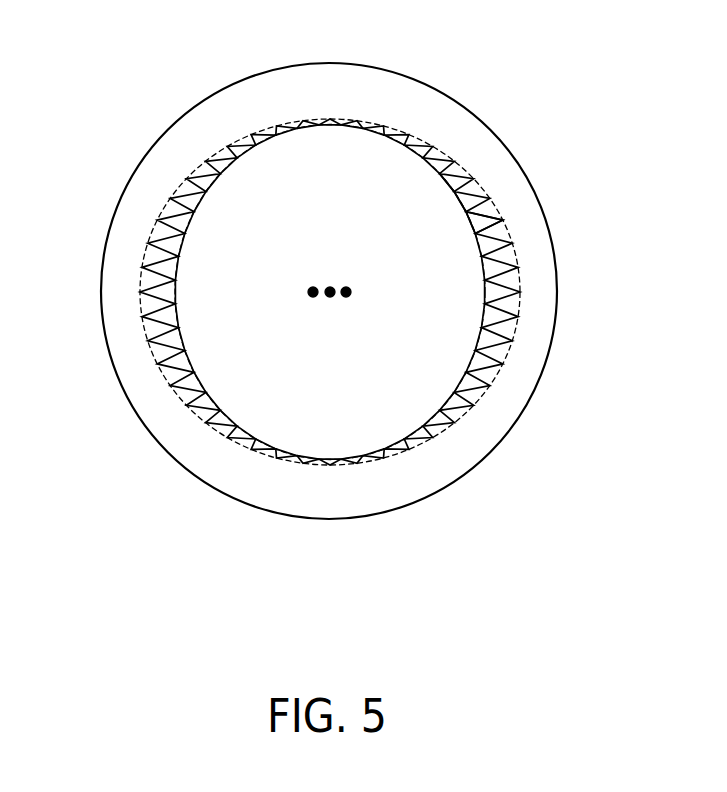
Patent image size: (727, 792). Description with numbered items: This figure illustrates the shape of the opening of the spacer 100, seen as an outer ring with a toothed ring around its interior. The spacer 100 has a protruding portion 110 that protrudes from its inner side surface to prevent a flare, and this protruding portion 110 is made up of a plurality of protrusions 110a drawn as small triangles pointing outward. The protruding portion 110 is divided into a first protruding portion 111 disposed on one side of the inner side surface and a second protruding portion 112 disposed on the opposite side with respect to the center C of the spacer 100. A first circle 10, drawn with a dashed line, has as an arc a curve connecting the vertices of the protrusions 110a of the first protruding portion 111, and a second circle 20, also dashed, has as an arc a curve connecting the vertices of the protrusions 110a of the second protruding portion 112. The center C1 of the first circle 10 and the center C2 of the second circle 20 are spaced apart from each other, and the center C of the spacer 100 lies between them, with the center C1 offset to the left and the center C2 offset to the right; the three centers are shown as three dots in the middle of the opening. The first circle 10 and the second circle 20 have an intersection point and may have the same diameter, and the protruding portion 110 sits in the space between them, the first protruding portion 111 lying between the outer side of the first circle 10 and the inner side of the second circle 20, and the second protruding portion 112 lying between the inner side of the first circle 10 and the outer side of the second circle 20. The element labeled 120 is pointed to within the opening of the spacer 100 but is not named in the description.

The spacer 100 is at (157, 165).
The first circle 10 is at (143, 328).
The second circle 20 is at (522, 288).
The protruding portion 110 is at (565, 593).
The first protruding portion 111 is at (498, 230).
The second protruding portion 112 is at (202, 160).
The protrusion 110a is at (460, 200).
The inner space 120 is at (352, 204).
The center of the spacer C is at (330, 297).
The center of the first circle C1 is at (313, 297).
The center of the second circle C2 is at (346, 297).